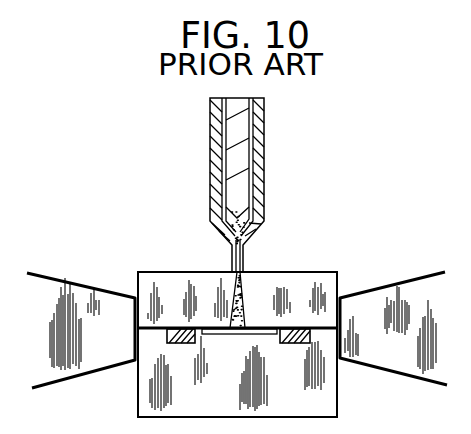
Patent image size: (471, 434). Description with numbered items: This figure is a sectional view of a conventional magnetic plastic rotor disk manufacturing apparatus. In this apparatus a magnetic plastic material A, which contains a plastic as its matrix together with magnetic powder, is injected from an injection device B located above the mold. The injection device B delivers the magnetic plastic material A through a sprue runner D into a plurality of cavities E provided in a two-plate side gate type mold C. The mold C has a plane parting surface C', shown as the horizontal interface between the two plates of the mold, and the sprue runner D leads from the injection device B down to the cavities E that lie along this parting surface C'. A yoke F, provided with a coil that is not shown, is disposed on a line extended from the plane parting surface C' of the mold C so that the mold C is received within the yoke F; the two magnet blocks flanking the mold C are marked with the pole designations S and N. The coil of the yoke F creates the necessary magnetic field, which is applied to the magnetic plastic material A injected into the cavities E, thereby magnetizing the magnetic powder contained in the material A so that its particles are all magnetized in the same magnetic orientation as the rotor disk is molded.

The magnetic plastic material A is at (213, 200).
The injection device B is at (224, 146).
The two-plate side gate type mold C is at (237, 273).
The plane parting surface C' is at (232, 283).
The sprue runner D is at (243, 305).
The cavities E is at (172, 328).
The yoke F is at (237, 304).
The south magnetic pole S is at (81, 330).
The north magnetic pole N is at (393, 328).